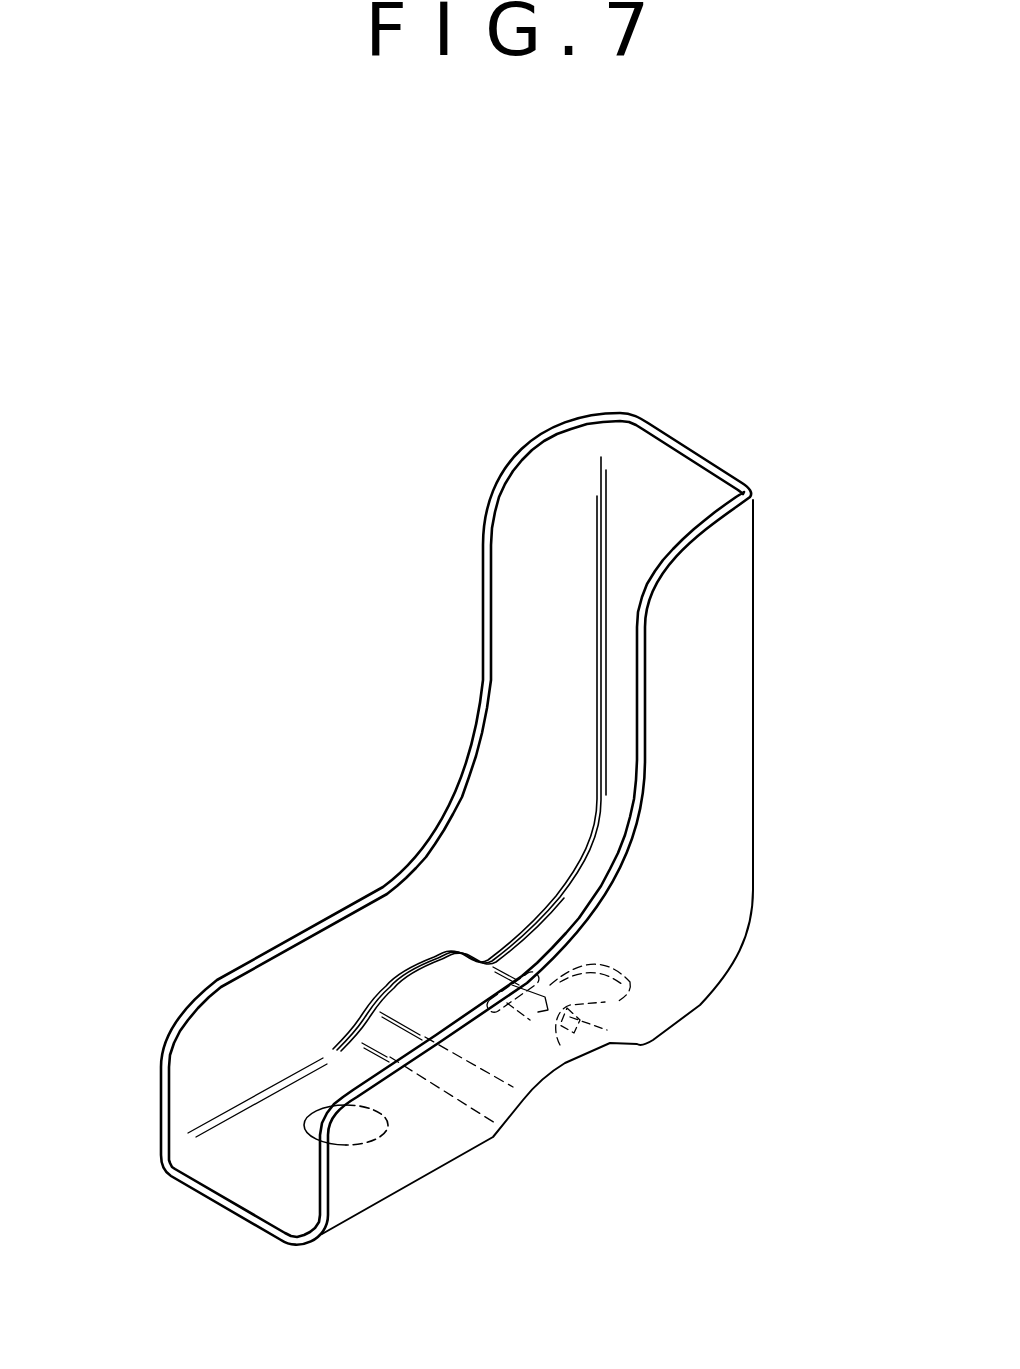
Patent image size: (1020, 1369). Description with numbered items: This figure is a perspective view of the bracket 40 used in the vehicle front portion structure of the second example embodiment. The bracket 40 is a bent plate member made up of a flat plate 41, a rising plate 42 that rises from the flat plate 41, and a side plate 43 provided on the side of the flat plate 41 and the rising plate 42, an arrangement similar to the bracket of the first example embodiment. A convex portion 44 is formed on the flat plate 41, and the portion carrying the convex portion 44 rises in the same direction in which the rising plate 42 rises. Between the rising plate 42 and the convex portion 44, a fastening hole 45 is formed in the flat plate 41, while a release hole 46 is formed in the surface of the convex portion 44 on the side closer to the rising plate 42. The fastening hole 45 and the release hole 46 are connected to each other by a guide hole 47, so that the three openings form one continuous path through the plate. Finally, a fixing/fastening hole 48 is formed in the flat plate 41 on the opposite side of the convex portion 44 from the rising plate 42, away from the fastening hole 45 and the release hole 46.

The bracket 40 is at (693, 345).
The flat plate 41 is at (262, 1186).
The rising plate 42 is at (673, 470).
The side plate 43 is at (533, 967).
The convex portion 44 is at (422, 1002).
The fastening hole 45 is at (617, 1002).
The release hole 46 is at (530, 1020).
The guide hole 47 is at (557, 1037).
The fixing/fastening hole 48 is at (307, 1108).